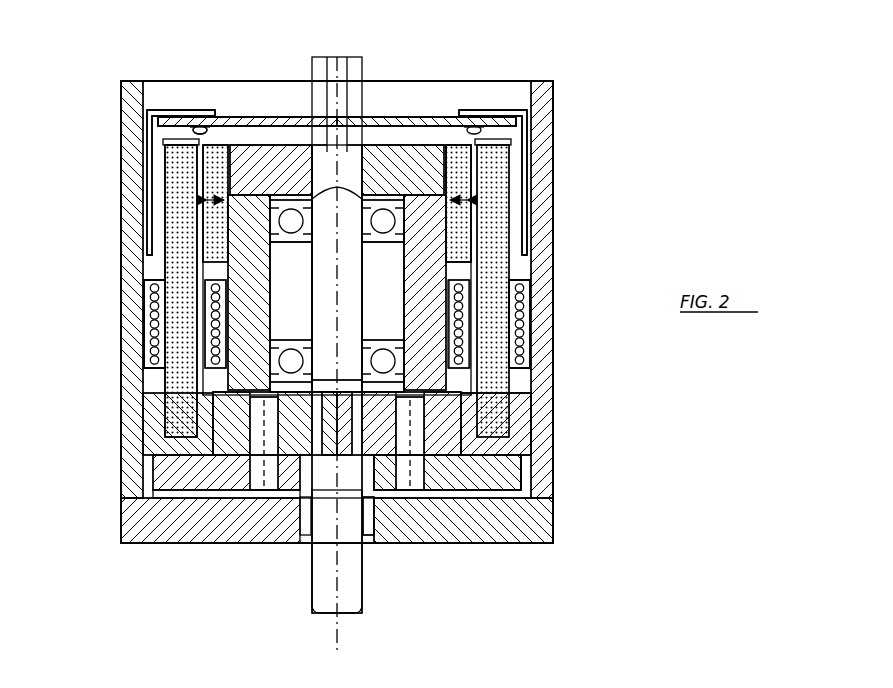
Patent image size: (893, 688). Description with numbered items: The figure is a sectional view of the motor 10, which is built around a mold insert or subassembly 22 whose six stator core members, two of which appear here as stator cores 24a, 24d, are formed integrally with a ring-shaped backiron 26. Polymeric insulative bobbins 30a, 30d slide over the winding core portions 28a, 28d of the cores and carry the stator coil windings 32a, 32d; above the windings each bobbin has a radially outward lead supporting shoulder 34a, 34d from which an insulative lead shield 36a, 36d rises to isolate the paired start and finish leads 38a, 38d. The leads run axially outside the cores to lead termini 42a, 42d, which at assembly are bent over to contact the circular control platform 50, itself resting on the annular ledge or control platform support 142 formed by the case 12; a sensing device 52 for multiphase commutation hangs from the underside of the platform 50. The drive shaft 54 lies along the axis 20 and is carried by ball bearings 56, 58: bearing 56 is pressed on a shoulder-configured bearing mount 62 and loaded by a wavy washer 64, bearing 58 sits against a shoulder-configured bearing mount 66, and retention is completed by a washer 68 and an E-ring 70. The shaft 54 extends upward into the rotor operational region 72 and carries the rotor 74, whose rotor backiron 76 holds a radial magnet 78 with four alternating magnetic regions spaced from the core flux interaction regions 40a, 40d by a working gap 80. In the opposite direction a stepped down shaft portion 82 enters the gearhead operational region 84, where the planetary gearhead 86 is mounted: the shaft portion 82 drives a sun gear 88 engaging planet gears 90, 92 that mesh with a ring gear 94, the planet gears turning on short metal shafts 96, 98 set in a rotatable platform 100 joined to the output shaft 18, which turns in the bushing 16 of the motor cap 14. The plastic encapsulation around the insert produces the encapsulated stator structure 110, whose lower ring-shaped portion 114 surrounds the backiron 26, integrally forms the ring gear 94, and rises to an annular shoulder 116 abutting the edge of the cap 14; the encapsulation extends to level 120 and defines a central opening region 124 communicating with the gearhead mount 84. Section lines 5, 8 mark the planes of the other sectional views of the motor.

The motor 10 is at (626, 76).
The case 12 is at (553, 280).
The motor cap 14 is at (545, 538).
The bushing 16 is at (370, 527).
The output shaft 18 is at (360, 593).
The axis 20 is at (337, 62).
The mold insert or subassembly 22 is at (182, 312).
The stator pole or core member 24a is at (533, 332).
The stator pole or core member 24d is at (150, 372).
The ring-shaped backiron 26 is at (548, 406).
The winding core portion 28a is at (528, 320).
The winding core portion 28d is at (143, 317).
The bobbin 30a is at (550, 362).
The bobbin 30d is at (143, 378).
The stator coil winding 32a is at (540, 298).
The stator coil winding 32d is at (150, 350).
The lead supporting shoulder 34a is at (533, 252).
The lead supporting shoulder 34d is at (155, 262).
The lead shield 36a is at (480, 155).
The lead shield 36d is at (165, 153).
The start and finish leads 38a is at (533, 181).
The start and finish leads 38d is at (140, 181).
The core flux interaction region 40a is at (533, 172).
The core flux interaction region 40d is at (180, 205).
The lead terminus 42a is at (507, 108).
The lead terminus 42d is at (150, 108).
The circular control platform 50 is at (411, 118).
The sensing circuit or device 52 is at (201, 126).
The drive shaft 54 is at (313, 160).
The ball bearing 56 is at (397, 242).
The ball bearing 58 is at (278, 338).
The shoulder-configured bearing mount 62 is at (277, 247).
The wavy washer 64 is at (345, 160).
The shoulder-configured bearing mount 66 is at (402, 337).
The washer 68 is at (320, 380).
The E-ring 70 is at (355, 382).
The rotor operational region 72 is at (272, 133).
The rotor 74 is at (378, 133).
The rotor backiron 76 is at (430, 160).
The radial magnet 78 is at (456, 160).
The working gap 80 is at (160, 132).
The stepped down shaft portion 82 is at (325, 460).
The gearhead operational region 84 is at (213, 490).
The planetary gearhead 86 is at (464, 492).
The sun gear 88 is at (290, 490).
The planet gear 90 is at (465, 428).
The planet gear 92 is at (238, 440).
The ring gear 94 is at (553, 470).
The short metal shaft 96 is at (415, 487).
The short metal shaft 98 is at (258, 490).
The rotatable platform 100 is at (530, 492).
The encapsulated stator structure 110 is at (568, 368).
The lower ring-shaped portion 114 is at (542, 450).
The annular shoulder 116 is at (540, 384).
The level 120 is at (527, 225).
The central opening region 124 is at (280, 284).
The control platform support 142 is at (527, 113).
The section line 5 is at (110, 455).
The section line 8 is at (42, 125).